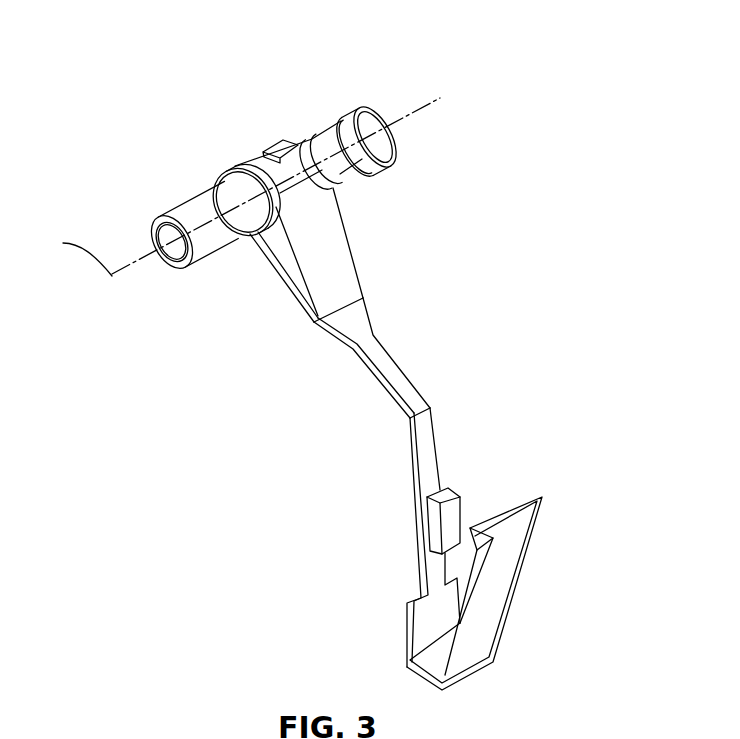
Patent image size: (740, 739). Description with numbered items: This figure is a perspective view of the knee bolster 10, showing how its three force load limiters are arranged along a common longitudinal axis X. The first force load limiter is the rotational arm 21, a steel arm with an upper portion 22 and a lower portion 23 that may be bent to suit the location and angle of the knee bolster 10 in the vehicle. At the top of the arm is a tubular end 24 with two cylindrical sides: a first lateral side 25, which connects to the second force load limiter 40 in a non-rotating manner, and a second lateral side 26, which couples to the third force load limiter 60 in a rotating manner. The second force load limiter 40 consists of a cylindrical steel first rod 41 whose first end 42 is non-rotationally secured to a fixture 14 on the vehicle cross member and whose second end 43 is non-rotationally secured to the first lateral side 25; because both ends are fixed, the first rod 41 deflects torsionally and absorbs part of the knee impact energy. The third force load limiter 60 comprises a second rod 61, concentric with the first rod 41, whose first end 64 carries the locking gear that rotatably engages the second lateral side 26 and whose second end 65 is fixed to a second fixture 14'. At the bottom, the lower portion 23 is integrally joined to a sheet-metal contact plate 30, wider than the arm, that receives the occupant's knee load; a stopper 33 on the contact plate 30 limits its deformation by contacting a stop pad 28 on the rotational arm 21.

The knee bolster 10 is at (568, 160).
The fixture 14 is at (263, 240).
The second fixture 14' is at (396, 108).
The rotational arm 21 is at (410, 405).
The upper portion 22 is at (393, 432).
The lower portion 23 is at (392, 433).
The tubular end 24 is at (315, 206).
The first lateral side 25 is at (243, 172).
The second lateral side 26 is at (309, 157).
The stop pad 28 is at (448, 513).
The contact plate 30 is at (495, 630).
The stopper 33 is at (487, 507).
The second force load limiter 40 is at (163, 198).
The first rod 41 is at (210, 208).
The first end 42 is at (176, 251).
The second end 43 is at (222, 182).
The third force load limiter 60 is at (318, 106).
The second rod 61 is at (350, 157).
The first end 64 is at (330, 183).
The second end 65 is at (393, 128).